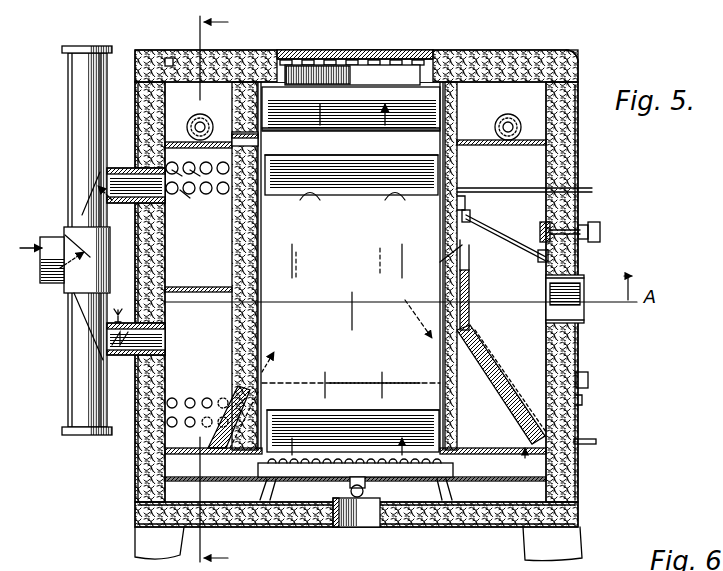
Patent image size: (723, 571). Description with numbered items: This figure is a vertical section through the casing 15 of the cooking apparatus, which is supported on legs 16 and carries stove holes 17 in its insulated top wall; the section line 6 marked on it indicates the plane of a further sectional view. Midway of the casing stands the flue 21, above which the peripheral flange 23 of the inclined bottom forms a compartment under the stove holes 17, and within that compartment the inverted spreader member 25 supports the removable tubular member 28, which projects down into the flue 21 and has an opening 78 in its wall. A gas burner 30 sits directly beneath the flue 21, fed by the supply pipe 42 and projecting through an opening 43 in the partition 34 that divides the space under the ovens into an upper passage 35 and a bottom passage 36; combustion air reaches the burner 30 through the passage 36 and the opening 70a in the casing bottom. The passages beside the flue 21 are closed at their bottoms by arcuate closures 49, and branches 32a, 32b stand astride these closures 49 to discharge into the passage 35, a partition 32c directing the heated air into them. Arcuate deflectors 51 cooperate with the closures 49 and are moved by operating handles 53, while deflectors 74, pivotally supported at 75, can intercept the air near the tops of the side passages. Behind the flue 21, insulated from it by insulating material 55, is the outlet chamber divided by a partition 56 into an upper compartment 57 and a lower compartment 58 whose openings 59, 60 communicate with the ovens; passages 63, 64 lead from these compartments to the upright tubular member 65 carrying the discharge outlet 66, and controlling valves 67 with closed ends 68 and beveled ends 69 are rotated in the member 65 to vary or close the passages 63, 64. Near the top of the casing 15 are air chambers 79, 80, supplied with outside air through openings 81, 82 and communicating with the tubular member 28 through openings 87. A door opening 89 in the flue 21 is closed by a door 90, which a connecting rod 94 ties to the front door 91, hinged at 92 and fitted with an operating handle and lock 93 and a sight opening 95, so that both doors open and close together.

The section line 6 is at (211, 281).
The casing 15 is at (167, 456).
The legs 16 is at (146, 540).
The stove holes 17 is at (354, 72).
The flue 21 is at (282, 384).
The peripheral flange 23 is at (265, 92).
The inverted spreader member 25 is at (440, 106).
The tubular member 28 is at (266, 366).
The gas burner 30 is at (325, 468).
The branch of the flue 32a is at (498, 392).
The branch of the flue 32b is at (170, 440).
The partition 32c is at (336, 382).
The partition 34 is at (532, 474).
The passage 35 is at (493, 460).
The bottom passage 36 is at (355, 489).
The supply pipe 42 is at (368, 485).
The opening 43 is at (299, 466).
The closure 49 is at (404, 422).
The deflector 51 is at (354, 416).
The operating handle 53 is at (597, 442).
The insulating material 55 is at (236, 250).
The partition 56 is at (213, 287).
The upper compartment 57 is at (214, 228).
The outlet chamber 58 is at (198, 370).
The openings 59 is at (220, 194).
The openings 60 is at (196, 400).
The tubular member 63 is at (150, 190).
The tubular member 64 is at (158, 350).
The tubular member 65 is at (70, 183).
The discharge outlet 66 is at (48, 253).
The controlling valve 67 is at (78, 89).
The closed end 68 is at (98, 47).
The beveled end 69 is at (90, 182).
The opening 70a is at (369, 518).
The deflector 74 is at (367, 170).
The pivot 75 is at (489, 188).
The opening 78 is at (427, 170).
The air chamber 79 is at (512, 96).
The air chamber 80 is at (256, 82).
The opening 81 is at (510, 125).
The opening 82 is at (200, 125).
The openings 87 is at (262, 134).
The door opening 89 is at (460, 250).
The door 90 is at (470, 248).
The door 91 is at (578, 268).
The hinge 92 is at (590, 380).
The operating handle and lock 93 is at (600, 236).
The connecting rod 94 is at (505, 237).
The sight opening 95 is at (584, 306).